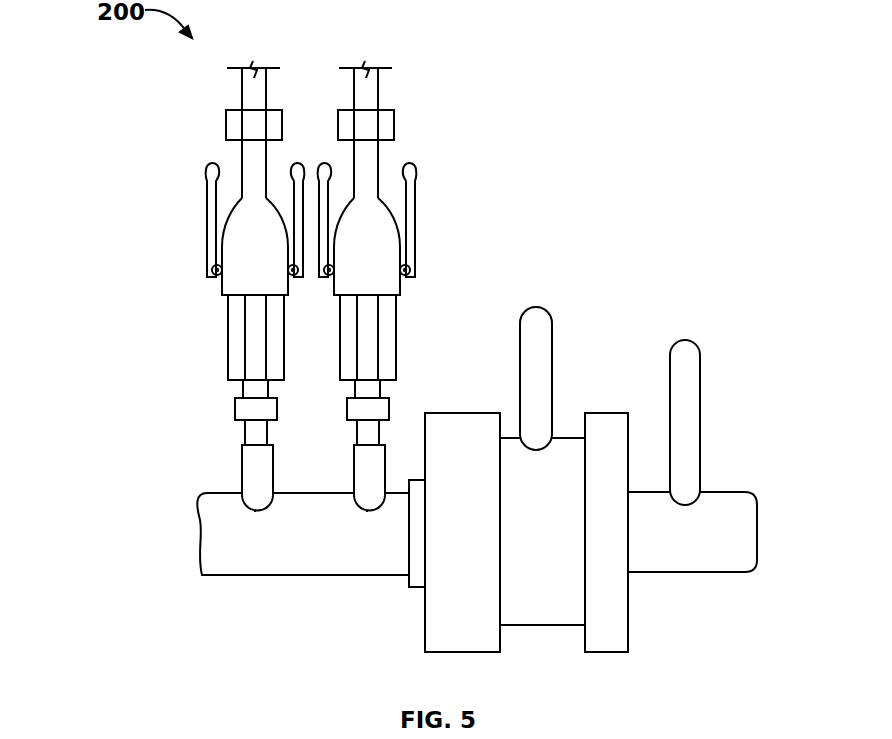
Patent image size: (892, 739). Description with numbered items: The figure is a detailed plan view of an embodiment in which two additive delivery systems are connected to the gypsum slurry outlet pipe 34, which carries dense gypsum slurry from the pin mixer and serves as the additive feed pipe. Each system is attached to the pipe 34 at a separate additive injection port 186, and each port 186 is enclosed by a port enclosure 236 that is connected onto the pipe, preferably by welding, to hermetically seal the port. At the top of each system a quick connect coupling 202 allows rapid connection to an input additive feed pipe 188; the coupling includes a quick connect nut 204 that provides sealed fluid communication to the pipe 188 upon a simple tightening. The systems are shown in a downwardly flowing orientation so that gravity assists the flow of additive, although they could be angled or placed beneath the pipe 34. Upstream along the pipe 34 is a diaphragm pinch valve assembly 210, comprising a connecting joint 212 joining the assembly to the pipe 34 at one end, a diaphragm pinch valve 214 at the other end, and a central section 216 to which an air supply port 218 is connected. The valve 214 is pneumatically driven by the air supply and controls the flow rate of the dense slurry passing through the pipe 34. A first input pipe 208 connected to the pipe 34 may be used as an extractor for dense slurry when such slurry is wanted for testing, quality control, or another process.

The input additive feed pipe 188 is at (245, 80).
The quick connect coupling 202 is at (222, 107).
The quick connect nut 204 is at (282, 118).
The port enclosure 236 is at (358, 472).
The additive injection port 186 is at (370, 512).
The gypsum slurry outlet pipe 34 is at (262, 568).
The diaphragm pinch valve 214 is at (458, 422).
The central section 216 is at (540, 618).
The connecting joint 212 is at (613, 648).
The diaphragm pinch valve assembly 210 is at (609, 405).
The air supply port 218 is at (535, 452).
The first input pipe 208 is at (690, 392).